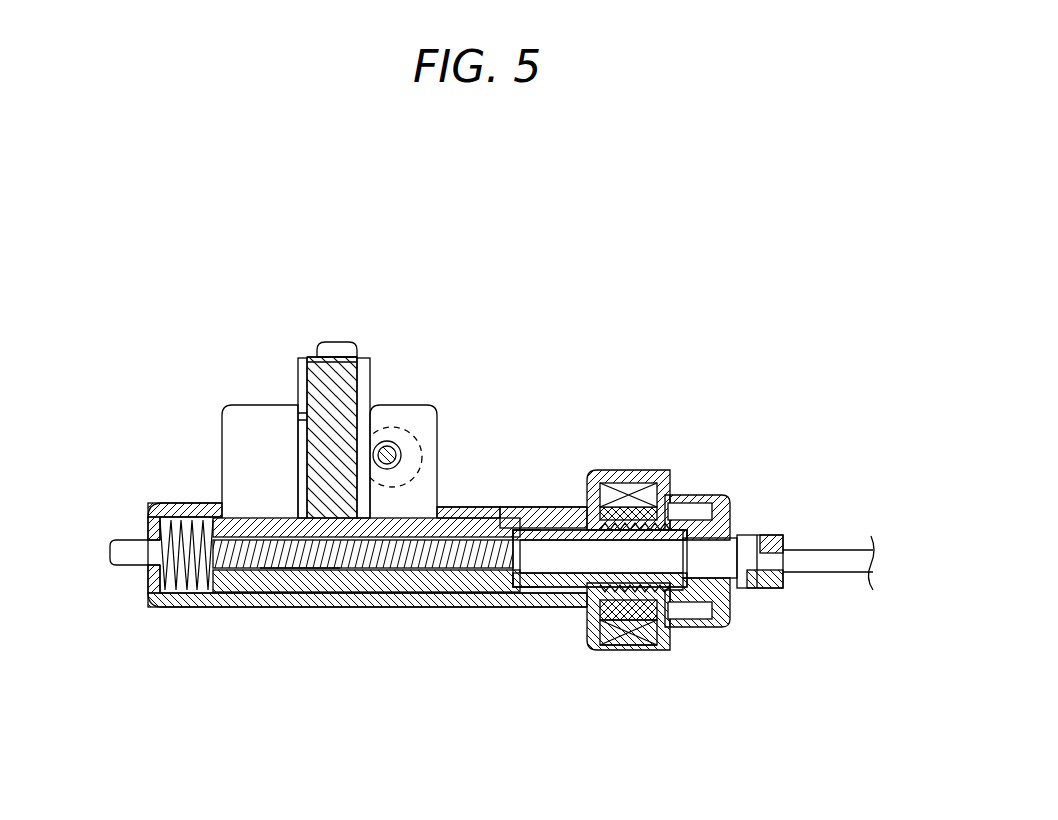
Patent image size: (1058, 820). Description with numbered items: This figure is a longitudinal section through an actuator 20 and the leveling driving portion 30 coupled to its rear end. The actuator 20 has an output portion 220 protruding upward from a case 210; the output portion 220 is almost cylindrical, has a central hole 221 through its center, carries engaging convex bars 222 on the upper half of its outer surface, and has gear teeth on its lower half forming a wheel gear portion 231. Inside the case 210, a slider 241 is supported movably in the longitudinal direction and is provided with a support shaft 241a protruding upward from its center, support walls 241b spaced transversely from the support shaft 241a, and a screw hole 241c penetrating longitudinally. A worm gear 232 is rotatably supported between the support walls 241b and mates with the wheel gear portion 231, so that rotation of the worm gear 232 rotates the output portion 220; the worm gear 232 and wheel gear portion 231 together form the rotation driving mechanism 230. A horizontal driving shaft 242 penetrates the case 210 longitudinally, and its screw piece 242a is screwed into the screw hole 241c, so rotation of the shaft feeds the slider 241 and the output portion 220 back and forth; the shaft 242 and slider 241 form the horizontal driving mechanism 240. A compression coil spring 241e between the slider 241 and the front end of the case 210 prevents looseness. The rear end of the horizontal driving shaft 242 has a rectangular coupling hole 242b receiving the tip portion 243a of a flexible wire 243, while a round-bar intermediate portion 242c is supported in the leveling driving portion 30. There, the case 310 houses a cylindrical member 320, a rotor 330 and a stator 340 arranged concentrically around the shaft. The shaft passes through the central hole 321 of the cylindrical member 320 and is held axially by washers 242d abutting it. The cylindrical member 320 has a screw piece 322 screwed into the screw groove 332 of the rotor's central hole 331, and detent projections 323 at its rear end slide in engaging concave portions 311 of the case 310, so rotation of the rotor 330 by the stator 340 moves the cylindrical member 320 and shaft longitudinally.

The actuator 20 is at (202, 375).
The case 210 is at (180, 607).
The output portion 220 is at (377, 377).
The central hole 221 is at (323, 350).
The engaging convex bars 222 is at (372, 402).
The rotation driving mechanism 230 is at (472, 365).
The wheel gear portion 231 is at (423, 407).
The worm gear 232 is at (433, 413).
The horizontal driving mechanism 240 is at (479, 490).
The slider 241 is at (306, 485).
The support shaft 241a is at (342, 370).
The support walls 241b is at (240, 462).
The screw hole 241c is at (283, 565).
The compression coil spring 241e is at (170, 505).
The horizontal driving shaft 242 is at (636, 571).
The screw piece 242a is at (320, 562).
The coupling hole 242b is at (783, 580).
The intermediate portion 242c is at (535, 610).
The washers 242d is at (510, 532).
The flexible wire 243 is at (800, 575).
The tip portion 243a is at (757, 590).
The leveling driving portion 30 is at (658, 548).
The case 310 is at (640, 468).
The engaging concave portions 311 is at (740, 508).
The cylindrical member 320 is at (588, 640).
The central hole 321 is at (543, 528).
The screw piece 322 is at (642, 653).
The detent projections 323 is at (680, 507).
The rotor 330 is at (683, 493).
The central hole 331 is at (690, 493).
The screw groove 332 is at (578, 510).
The stator 340 is at (607, 653).